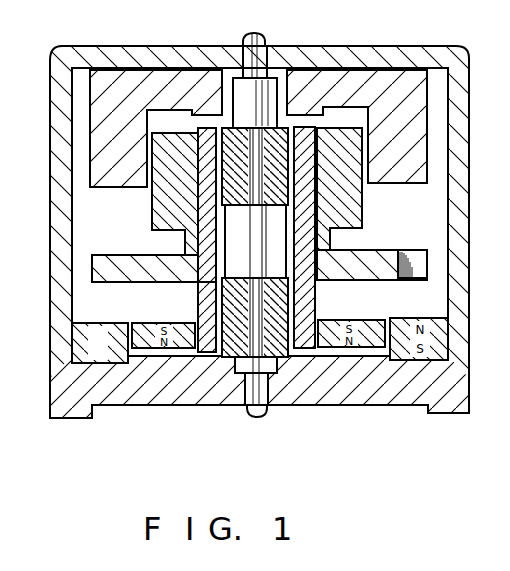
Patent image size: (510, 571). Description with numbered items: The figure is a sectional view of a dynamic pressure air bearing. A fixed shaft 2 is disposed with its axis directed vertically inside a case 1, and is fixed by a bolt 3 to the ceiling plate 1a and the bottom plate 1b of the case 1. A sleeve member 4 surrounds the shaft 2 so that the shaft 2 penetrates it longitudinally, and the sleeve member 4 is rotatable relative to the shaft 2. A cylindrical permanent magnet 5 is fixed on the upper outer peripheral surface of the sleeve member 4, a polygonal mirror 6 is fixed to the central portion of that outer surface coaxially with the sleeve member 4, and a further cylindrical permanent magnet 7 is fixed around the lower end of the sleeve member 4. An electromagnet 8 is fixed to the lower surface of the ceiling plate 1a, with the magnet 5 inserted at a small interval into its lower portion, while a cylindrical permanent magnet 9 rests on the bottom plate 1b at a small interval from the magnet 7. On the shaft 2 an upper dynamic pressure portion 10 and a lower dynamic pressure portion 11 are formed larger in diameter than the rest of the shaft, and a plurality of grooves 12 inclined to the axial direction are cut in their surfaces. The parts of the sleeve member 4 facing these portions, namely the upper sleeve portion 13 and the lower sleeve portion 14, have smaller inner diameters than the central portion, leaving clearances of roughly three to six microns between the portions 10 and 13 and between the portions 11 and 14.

The case 1 is at (259, 231).
The ceiling plate 1a is at (131, 55).
The bottom plate 1b is at (132, 405).
The fixed shaft 2 is at (268, 97).
The bolt 3 is at (263, 35).
The sleeve member 4 is at (316, 305).
The cylindrical permanent magnet 5 is at (356, 210).
The polygonal mirror 6 is at (388, 273).
The cylindrical permanent magnet 7 is at (180, 350).
The electromagnet 8 is at (93, 130).
The cylindrical permanent magnet 9 is at (85, 325).
The upper dynamic pressure portion 10 is at (278, 165).
The lower dynamic pressure portion 11 is at (230, 312).
The grooves 12 is at (255, 241).
The upper sleeve portion 13 is at (202, 128).
The lower sleeve portion 14 is at (207, 352).